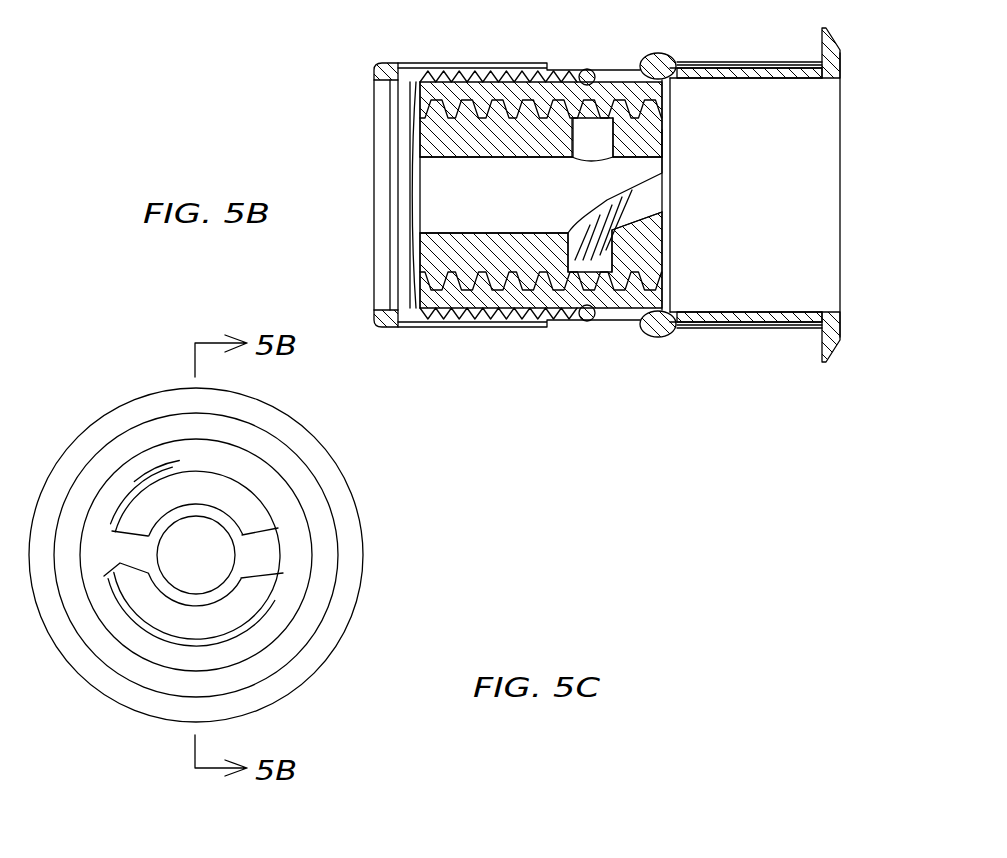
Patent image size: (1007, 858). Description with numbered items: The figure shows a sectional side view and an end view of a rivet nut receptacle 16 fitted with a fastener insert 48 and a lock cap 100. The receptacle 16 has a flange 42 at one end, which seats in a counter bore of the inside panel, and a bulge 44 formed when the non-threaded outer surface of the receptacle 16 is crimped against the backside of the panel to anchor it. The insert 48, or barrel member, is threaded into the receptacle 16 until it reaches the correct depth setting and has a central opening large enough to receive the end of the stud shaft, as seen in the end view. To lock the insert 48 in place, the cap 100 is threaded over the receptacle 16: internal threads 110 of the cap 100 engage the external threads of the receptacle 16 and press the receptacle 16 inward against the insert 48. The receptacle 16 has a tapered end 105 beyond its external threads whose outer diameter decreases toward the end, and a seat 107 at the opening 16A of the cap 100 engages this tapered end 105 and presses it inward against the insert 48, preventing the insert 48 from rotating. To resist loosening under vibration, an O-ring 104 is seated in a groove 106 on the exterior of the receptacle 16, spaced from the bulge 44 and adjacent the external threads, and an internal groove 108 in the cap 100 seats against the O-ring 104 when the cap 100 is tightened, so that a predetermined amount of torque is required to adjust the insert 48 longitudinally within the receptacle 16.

In FIG. 5B, the receptacle 16 is at (725, 48).
In FIG. 5B, the opening 16A is at (362, 133).
In FIG. 5B, the flange 42 is at (840, 342).
In FIG. 5C, the flange 42 is at (343, 513).
In FIG. 5B, the bulge 44 is at (658, 338).
In FIG. 5B, the insert 48 is at (488, 234).
In FIG. 5C, the insert 48 is at (227, 613).
In FIG. 5B, the lock cap 100 is at (379, 61).
In FIG. 5B, the O-ring 104 is at (587, 68).
In FIG. 5B, the tapered end 105 is at (430, 310).
In FIG. 5B, the groove 106 is at (595, 305).
In FIG. 5B, the seat 107 is at (378, 303).
In FIG. 5B, the internal groove 108 is at (533, 70).
In FIG. 5B, the internal threads 110 is at (418, 110).